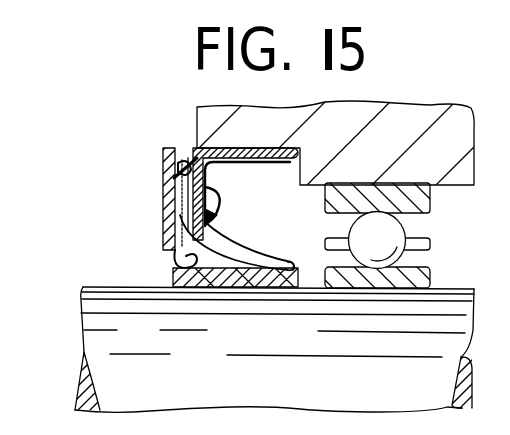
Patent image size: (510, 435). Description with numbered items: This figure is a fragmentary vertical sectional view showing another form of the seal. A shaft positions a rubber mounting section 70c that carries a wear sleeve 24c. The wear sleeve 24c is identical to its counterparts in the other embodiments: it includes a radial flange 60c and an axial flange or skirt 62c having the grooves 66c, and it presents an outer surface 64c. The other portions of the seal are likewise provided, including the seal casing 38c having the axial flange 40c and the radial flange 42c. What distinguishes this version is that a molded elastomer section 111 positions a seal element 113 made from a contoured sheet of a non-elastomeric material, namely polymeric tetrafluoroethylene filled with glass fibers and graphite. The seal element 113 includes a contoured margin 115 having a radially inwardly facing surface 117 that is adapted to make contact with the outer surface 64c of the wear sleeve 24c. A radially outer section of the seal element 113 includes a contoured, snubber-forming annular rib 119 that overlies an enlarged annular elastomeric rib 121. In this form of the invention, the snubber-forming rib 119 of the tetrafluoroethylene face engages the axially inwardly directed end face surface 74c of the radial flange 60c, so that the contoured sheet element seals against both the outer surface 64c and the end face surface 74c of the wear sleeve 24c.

The wear sleeve 24c is at (108, 155).
The seal casing 38c is at (247, 148).
The axial flange 40c is at (242, 160).
The radial flange 42c is at (205, 187).
The radial flange 60c is at (175, 204).
The axial flange or skirt 62c is at (203, 280).
The outer surface 64c is at (183, 278).
The grooves 66c is at (250, 283).
The rubber mounting section 70c is at (205, 280).
The end face surface 74c is at (171, 244).
The molded elastomer section 111 is at (210, 230).
The seal element 113 is at (172, 258).
The contoured margin 115 is at (258, 270).
The radially inwardly facing surface 117 is at (265, 287).
The snubber-forming annular rib 119 is at (186, 167).
The enlarged annular elastomeric rib 121 is at (188, 147).